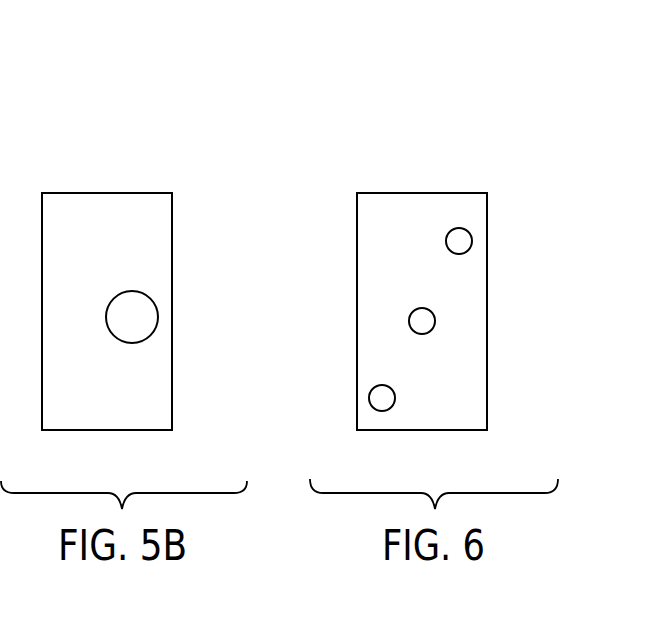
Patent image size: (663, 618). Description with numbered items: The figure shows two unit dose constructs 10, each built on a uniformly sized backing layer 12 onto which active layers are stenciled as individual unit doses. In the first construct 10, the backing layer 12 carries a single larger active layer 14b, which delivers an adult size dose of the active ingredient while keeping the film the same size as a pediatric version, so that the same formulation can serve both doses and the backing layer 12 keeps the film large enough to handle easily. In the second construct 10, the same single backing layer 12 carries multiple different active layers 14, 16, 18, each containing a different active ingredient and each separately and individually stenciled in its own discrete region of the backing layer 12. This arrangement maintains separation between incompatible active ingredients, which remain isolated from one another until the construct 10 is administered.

In FIG. 5B, the unit dose construct 10 is at (144, 306).
In FIG. 6, the unit dose construct 10 is at (455, 300).
In FIG. 5B, the backing layer 12 is at (158, 388).
In FIG. 6, the backing layer 12 is at (472, 290).
In FIG. 5B, the larger active layer 14b is at (142, 320).
In FIG. 6, the active layer 14 is at (465, 241).
In FIG. 6, the active layer 16 is at (427, 320).
In FIG. 6, the active layer 18 is at (382, 403).